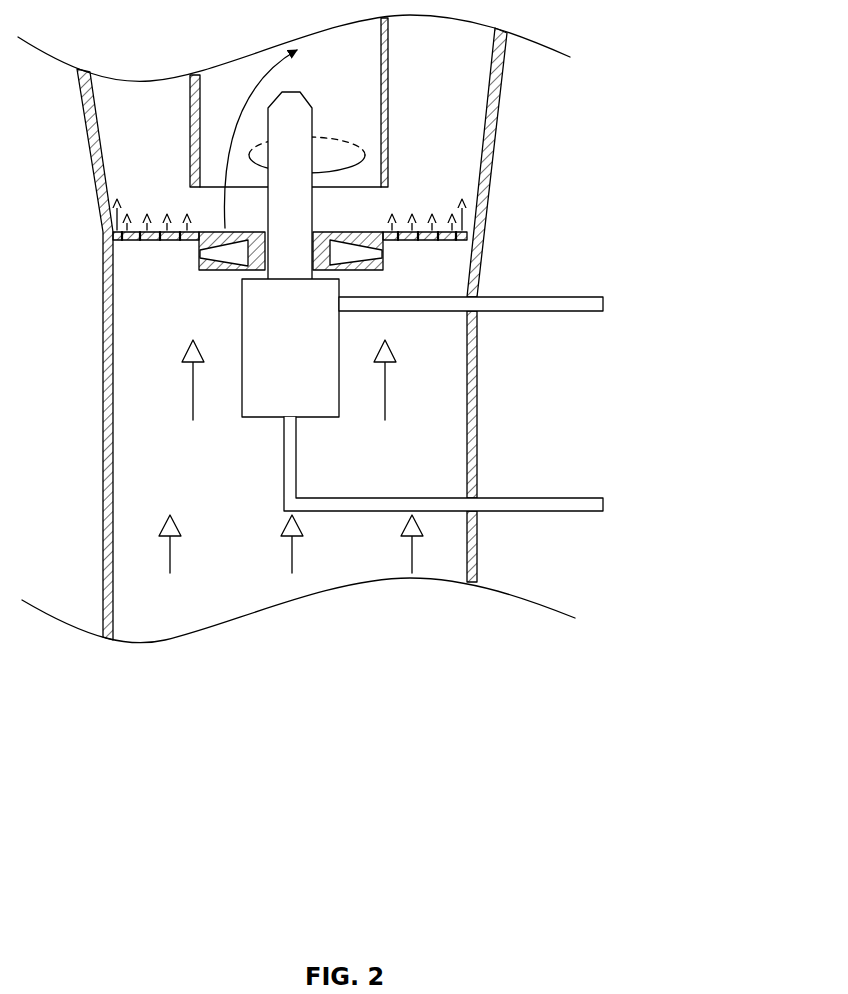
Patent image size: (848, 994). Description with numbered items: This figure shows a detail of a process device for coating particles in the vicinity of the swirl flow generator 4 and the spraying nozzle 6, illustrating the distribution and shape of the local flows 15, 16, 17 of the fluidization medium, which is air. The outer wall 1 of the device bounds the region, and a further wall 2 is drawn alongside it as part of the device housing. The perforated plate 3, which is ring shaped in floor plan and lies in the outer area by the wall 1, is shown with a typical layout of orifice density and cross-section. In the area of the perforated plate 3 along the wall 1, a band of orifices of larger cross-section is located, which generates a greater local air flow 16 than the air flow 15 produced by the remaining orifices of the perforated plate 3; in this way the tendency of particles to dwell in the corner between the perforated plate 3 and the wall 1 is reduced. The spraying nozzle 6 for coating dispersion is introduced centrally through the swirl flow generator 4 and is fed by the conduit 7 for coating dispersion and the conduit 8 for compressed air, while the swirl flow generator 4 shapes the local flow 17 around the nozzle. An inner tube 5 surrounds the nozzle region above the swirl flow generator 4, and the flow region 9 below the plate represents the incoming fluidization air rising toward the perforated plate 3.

The outer wall 1 is at (487, 139).
The casing wall 2 is at (476, 410).
The perforated plate 3 is at (440, 233).
The swirl flow generator 4 is at (200, 263).
The inner tube 5 is at (388, 87).
The spraying nozzle 6 is at (276, 395).
The conduit for coating dispersion 7 is at (606, 504).
The conduit for compressed air 8 is at (606, 304).
The flow passage 9 is at (291, 467).
The air flow 15 is at (294, 205).
The local air flow 16 is at (123, 195).
The local flow 17 is at (307, 143).